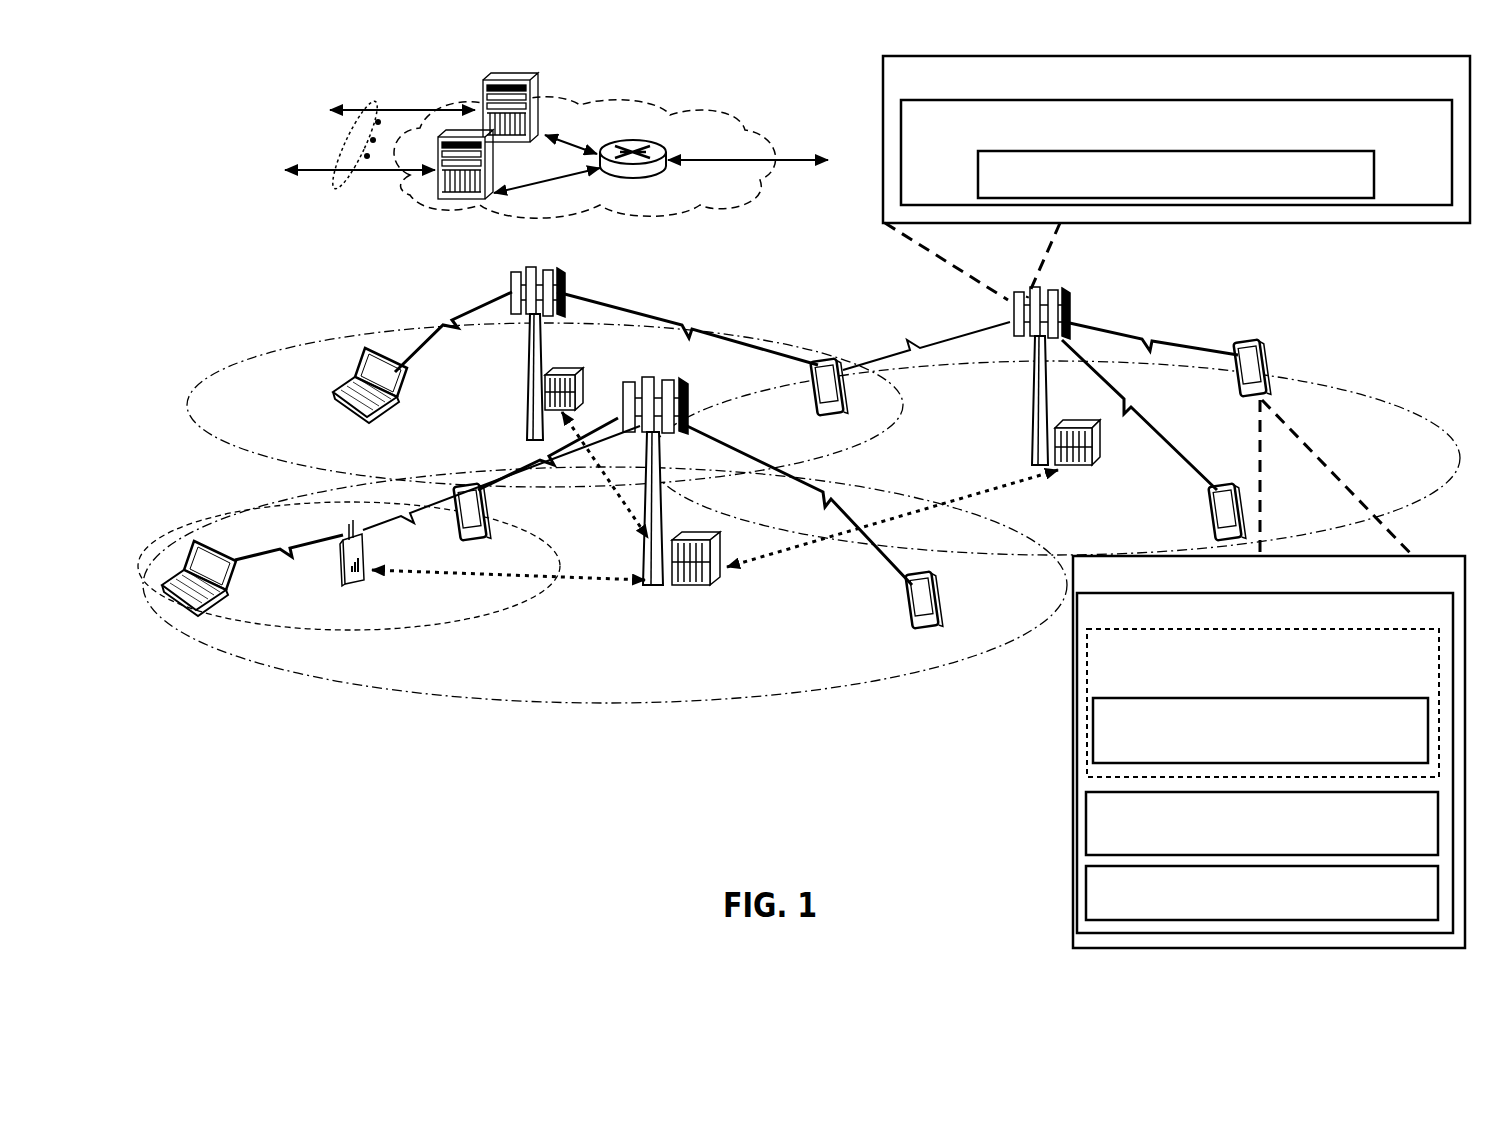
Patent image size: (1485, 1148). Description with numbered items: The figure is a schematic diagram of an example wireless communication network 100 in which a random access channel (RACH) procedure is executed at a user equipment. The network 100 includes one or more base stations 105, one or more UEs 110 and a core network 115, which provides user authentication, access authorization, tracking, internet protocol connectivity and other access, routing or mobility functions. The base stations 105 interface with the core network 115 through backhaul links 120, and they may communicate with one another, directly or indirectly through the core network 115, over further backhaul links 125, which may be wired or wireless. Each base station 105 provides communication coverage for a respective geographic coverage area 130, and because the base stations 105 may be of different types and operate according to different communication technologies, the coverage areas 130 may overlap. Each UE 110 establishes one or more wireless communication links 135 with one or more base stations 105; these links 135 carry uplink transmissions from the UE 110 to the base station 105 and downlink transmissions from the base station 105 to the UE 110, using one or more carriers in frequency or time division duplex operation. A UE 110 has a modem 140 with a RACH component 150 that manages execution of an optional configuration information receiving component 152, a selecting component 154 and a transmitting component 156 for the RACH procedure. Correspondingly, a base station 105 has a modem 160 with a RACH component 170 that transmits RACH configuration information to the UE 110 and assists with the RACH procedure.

The wireless communication network 100 is at (166, 120).
The base station 105 is at (530, 372).
The UE 110 is at (388, 412).
The core network 115 is at (663, 212).
The backhaul links 120 is at (362, 183).
The backhaul links 125 is at (613, 503).
The geographic coverage area 130 is at (250, 455).
The wireless communication links 135 is at (448, 316).
The modem 140 is at (1269, 674).
The RACH component 150 is at (1265, 763).
The configuration information receiving component 152 is at (1263, 703).
The selecting component 154 is at (1262, 823).
The transmitting component 156 is at (1262, 893).
The modem 160 is at (1176, 178).
The RACH component 170 is at (1176, 152).